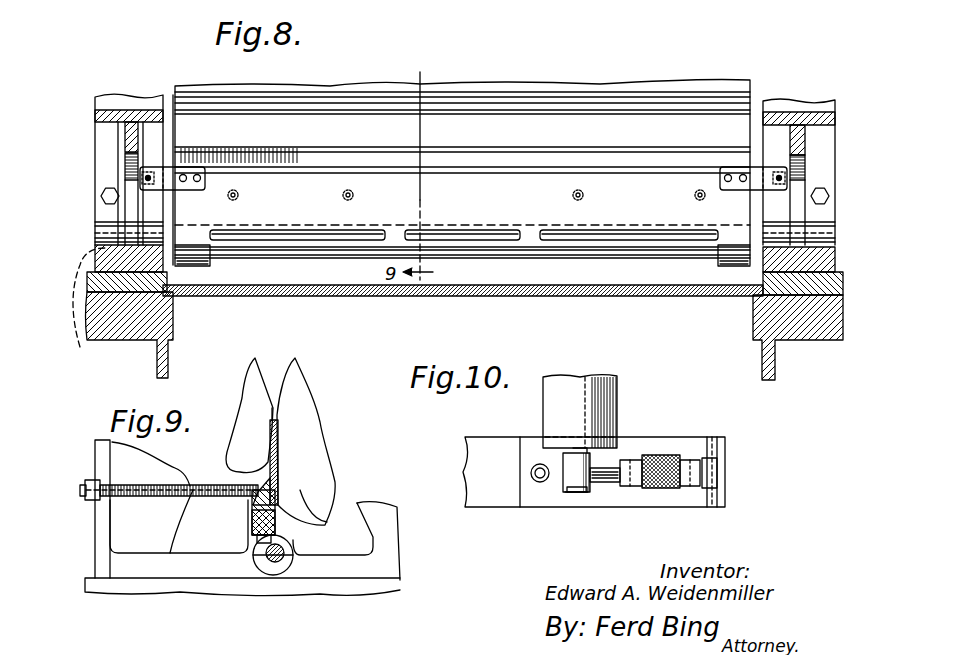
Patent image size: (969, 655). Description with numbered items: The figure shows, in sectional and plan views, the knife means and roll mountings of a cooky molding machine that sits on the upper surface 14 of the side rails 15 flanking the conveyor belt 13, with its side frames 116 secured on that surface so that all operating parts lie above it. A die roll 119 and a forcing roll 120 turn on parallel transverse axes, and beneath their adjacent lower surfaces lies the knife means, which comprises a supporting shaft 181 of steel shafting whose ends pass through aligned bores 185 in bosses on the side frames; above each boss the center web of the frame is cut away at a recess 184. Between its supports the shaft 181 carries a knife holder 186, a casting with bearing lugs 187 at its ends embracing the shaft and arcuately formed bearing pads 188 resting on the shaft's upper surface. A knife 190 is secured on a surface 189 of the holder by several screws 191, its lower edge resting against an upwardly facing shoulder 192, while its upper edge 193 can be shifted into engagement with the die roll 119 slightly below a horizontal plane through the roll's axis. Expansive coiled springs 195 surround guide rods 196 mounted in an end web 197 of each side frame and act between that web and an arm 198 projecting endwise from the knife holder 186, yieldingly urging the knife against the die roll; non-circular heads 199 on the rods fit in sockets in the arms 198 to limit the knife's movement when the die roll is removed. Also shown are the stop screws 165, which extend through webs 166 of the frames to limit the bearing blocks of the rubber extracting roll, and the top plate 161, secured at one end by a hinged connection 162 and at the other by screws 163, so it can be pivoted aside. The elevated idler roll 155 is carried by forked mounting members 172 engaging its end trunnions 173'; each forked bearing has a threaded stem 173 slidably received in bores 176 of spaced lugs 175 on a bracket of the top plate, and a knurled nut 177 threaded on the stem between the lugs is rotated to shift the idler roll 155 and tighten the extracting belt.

In FIG. 8, the conveyor belt 13 is at (539, 296).
In FIG. 8, the upper surface 14 is at (143, 290).
In FIG. 8, the side rails 15 is at (165, 320).
In FIG. 8, the side frames 116 is at (126, 93).
In FIG. 8, the die roll 119 is at (395, 82).
In FIG. 9, the die roll 119 is at (303, 406).
In FIG. 9, the forcing roll 120 is at (249, 398).
In FIG. 10, the idler roll 155 is at (550, 405).
In FIG. 10, the top plate 161 is at (618, 498).
In FIG. 10, the hinged connection 162 is at (730, 463).
In FIG. 10, the screws 163 is at (540, 488).
In FIG. 8, the stop screws 165 is at (103, 194).
In FIG. 8, the webs 166 is at (105, 137).
In FIG. 10, the forked mounting members 172 is at (572, 483).
In FIG. 10, the threaded stem 173 is at (623, 447).
In FIG. 10, the end trunnions 173' is at (576, 513).
In FIG. 10, the lugs 175 is at (632, 462).
In FIG. 10, the bores 176 is at (687, 490).
In FIG. 10, the knurled nut 177 is at (668, 490).
In FIG. 8, the supporting shaft 181 is at (488, 252).
In FIG. 9, the supporting shaft 181 is at (276, 562).
In FIG. 9, the recess 184 is at (367, 534).
In FIG. 8, the bores 185 is at (90, 308).
In FIG. 9, the knife holder 186 is at (252, 518).
In FIG. 8, the bearing lugs 187 is at (199, 260).
In FIG. 9, the bearing lugs 187 is at (292, 564).
In FIG. 8, the bearing pads 188 is at (398, 221).
In FIG. 9, the bearing pads 188 is at (256, 565).
In FIG. 9, the surface 189 is at (277, 477).
In FIG. 8, the knife 190 is at (330, 82).
In FIG. 9, the knife 190 is at (275, 464).
In FIG. 8, the screws 191 is at (320, 196).
In FIG. 9, the screws 191 is at (282, 511).
In FIG. 8, the shoulder 192 is at (475, 221).
In FIG. 9, the shoulder 192 is at (253, 531).
In FIG. 8, the upper edge 193 is at (548, 113).
In FIG. 9, the coiled springs 195 is at (150, 493).
In FIG. 8, the guide rods 196 is at (150, 187).
In FIG. 9, the guide rods 196 is at (80, 497).
In FIG. 9, the end web 197 is at (102, 452).
In FIG. 8, the arm 198 is at (187, 171).
In FIG. 9, the arm 198 is at (253, 503).
In FIG. 8, the heads 199 is at (147, 170).
In FIG. 9, the heads 199 is at (275, 487).